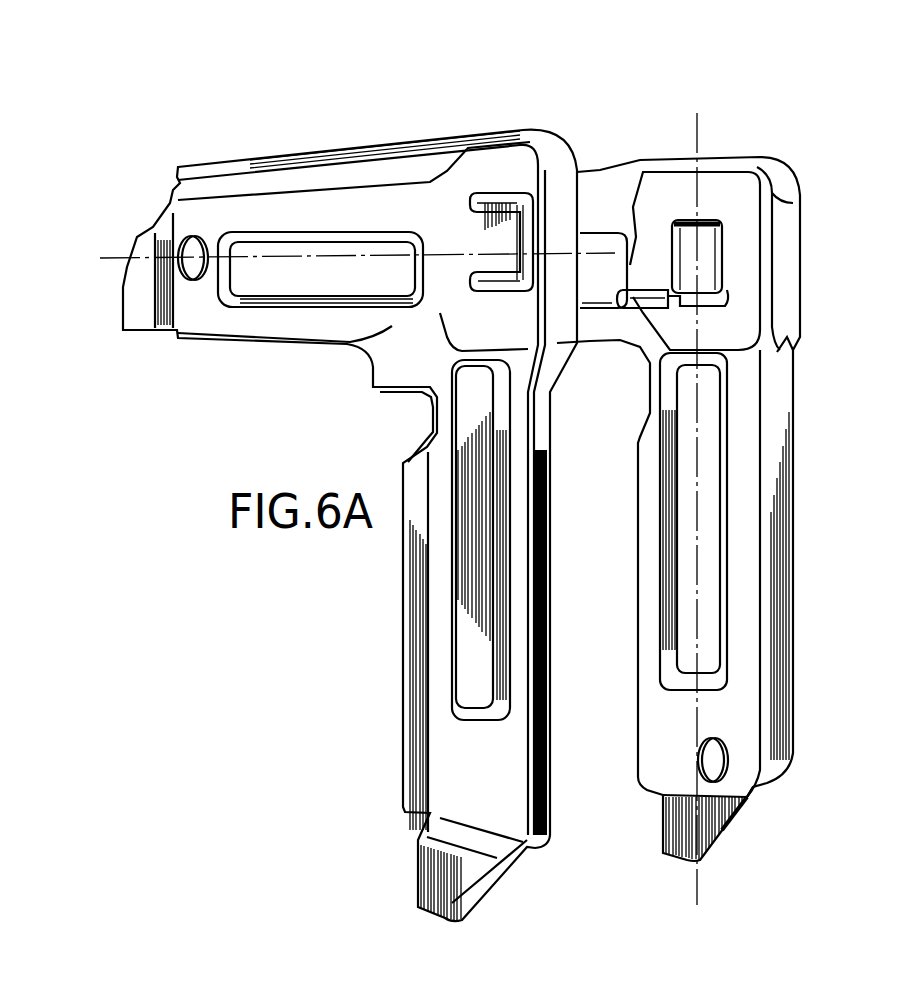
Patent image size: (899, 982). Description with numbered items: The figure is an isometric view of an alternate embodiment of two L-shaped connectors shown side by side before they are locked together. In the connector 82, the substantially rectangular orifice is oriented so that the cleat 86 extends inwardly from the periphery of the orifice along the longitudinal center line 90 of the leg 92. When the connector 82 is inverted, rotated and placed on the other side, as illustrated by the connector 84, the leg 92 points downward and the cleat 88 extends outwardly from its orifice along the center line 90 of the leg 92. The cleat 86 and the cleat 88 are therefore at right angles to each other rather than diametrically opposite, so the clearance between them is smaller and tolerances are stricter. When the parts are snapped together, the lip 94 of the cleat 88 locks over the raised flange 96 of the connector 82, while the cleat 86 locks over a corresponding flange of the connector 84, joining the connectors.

The connector 82 is at (350, 498).
The connector 84 is at (678, 466).
The cleat 86 is at (505, 233).
The cleat 88 is at (708, 292).
The center line 90 is at (118, 258).
The leg 92 is at (252, 213).
The lip 94 is at (648, 292).
The raised flange 96 is at (500, 290).